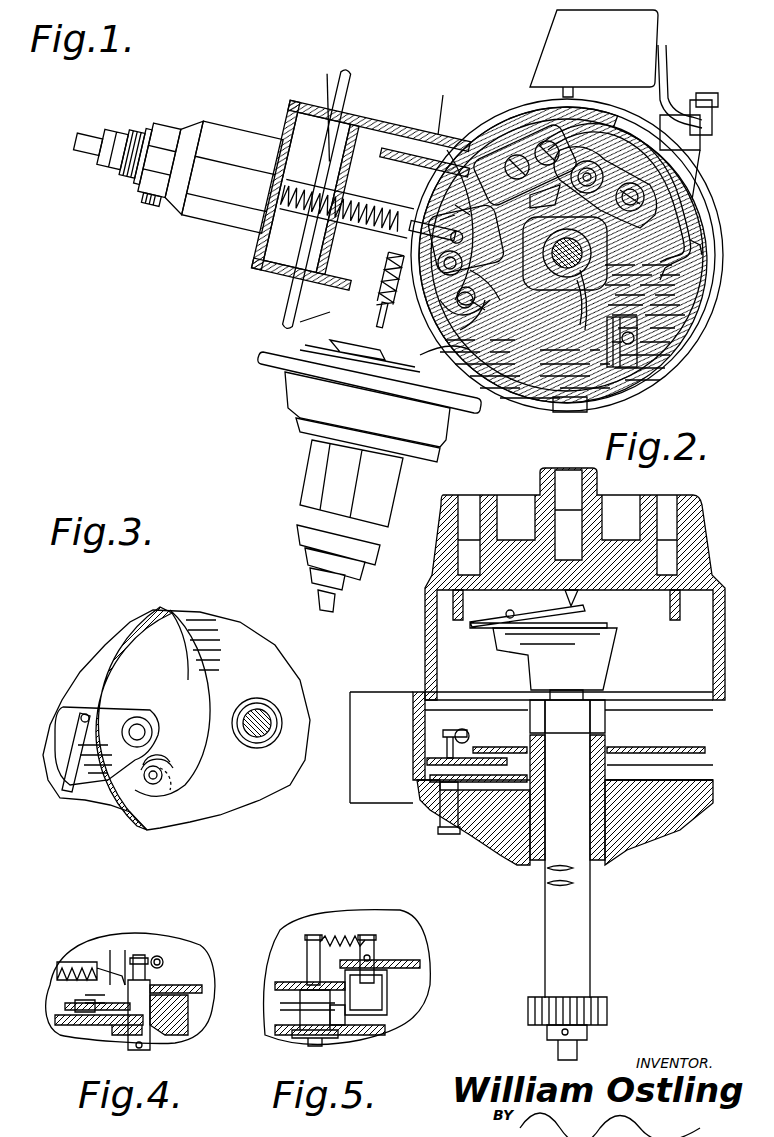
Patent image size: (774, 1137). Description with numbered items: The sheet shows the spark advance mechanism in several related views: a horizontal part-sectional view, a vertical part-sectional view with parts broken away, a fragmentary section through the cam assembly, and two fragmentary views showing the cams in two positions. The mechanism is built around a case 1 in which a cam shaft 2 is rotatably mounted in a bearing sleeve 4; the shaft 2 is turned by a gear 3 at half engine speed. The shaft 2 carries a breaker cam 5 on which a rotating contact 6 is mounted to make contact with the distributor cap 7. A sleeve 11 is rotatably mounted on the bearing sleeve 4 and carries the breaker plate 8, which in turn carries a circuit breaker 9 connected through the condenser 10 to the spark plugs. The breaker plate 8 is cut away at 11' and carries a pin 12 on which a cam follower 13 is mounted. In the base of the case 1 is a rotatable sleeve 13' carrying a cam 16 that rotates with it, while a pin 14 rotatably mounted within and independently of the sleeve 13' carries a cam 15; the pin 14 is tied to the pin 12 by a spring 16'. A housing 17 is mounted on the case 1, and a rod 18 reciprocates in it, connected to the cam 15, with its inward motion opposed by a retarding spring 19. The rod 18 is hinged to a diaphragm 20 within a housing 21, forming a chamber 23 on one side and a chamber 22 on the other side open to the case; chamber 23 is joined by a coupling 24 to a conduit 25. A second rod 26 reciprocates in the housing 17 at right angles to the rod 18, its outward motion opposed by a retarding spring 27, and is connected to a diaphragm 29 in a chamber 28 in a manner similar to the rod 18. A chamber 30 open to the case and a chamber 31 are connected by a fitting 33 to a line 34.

In FIG. 2, the case 1 is at (403, 677).
In FIG. 3, the case 1 is at (140, 616).
In FIG. 4, the case 1 is at (55, 1025).
In FIG. 5, the case 1 is at (272, 1032).
In FIG. 1, the shaft 2 is at (582, 322).
In FIG. 2, the shaft 2 is at (550, 904).
In FIG. 3, the shaft 2 is at (250, 745).
In FIG. 2, the gear 3 is at (528, 998).
In FIG. 2, the bearing sleeve 4 is at (507, 833).
In FIG. 3, the bearing sleeve 4 is at (68, 733).
In FIG. 1, the breaker cam 5 is at (462, 254).
In FIG. 2, the breaker cam 5 is at (535, 723).
In FIG. 2, the rotating contact 6 is at (530, 668).
In FIG. 2, the distributor cap 7 is at (438, 555).
In FIG. 1, the breaker plate 8 is at (646, 318).
In FIG. 2, the breaker plate 8 is at (690, 750).
In FIG. 3, the breaker plate 8 is at (256, 667).
In FIG. 1, the circuit breaker 9 is at (525, 193).
In FIG. 1, the condenser 10 is at (640, 403).
In FIG. 2, the sleeve 11 is at (660, 776).
In FIG. 1, the cut away 11' is at (449, 220).
In FIG. 3, the cut away 11' is at (172, 703).
In FIG. 1, the pin 12 is at (475, 315).
In FIG. 3, the pin 12 is at (163, 778).
In FIG. 5, the pin 12 is at (378, 938).
In FIG. 1, the cam follower 13 is at (483, 297).
In FIG. 3, the cam follower 13 is at (170, 763).
In FIG. 5, the cam follower 13 is at (397, 992).
In FIG. 4, the rotatable sleeve 13' is at (155, 1000).
In FIG. 1, the pin 14 is at (590, 202).
In FIG. 3, the pin 14 is at (140, 717).
In FIG. 4, the pin 14 is at (138, 955).
In FIG. 5, the pin 14 is at (314, 935).
In FIG. 1, the cam 15 is at (498, 260).
In FIG. 2, the cam 15 is at (443, 762).
In FIG. 4, the cam 15 is at (200, 985).
In FIG. 5, the cam 15 is at (305, 982).
In FIG. 2, the cam 16 is at (455, 804).
In FIG. 3, the cam 16 is at (107, 731).
In FIG. 4, the cam 16 is at (193, 1017).
In FIG. 5, the cam 16 is at (352, 1030).
In FIG. 4, the spring 16' is at (177, 930).
In FIG. 5, the spring 16' is at (349, 912).
In FIG. 1, the housing 17 is at (570, 80).
In FIG. 1, the rod 18 is at (455, 197).
In FIG. 4, the rod 18 is at (112, 950).
In FIG. 1, the retarding spring 19 is at (379, 190).
In FIG. 4, the retarding spring 19 is at (70, 962).
In FIG. 1, the diaphragm 20 is at (323, 174).
In FIG. 1, the housing 21 is at (358, 110).
In FIG. 1, the chamber 22 is at (367, 190).
In FIG. 1, the chamber 23 is at (297, 191).
In FIG. 1, the coupling 24 is at (201, 154).
In FIG. 1, the conduit 25 is at (96, 134).
In FIG. 1, the rod 26 is at (330, 314).
In FIG. 3, the rod 26 is at (62, 790).
In FIG. 1, the retarding spring 27 is at (371, 287).
In FIG. 1, the chamber 28 is at (262, 366).
In FIG. 1, the diaphragm 29 is at (300, 350).
In FIG. 1, the chamber 30 is at (470, 352).
In FIG. 1, the chamber 31 is at (430, 420).
In FIG. 1, the fitting 33 is at (316, 445).
In FIG. 1, the line 34 is at (310, 603).